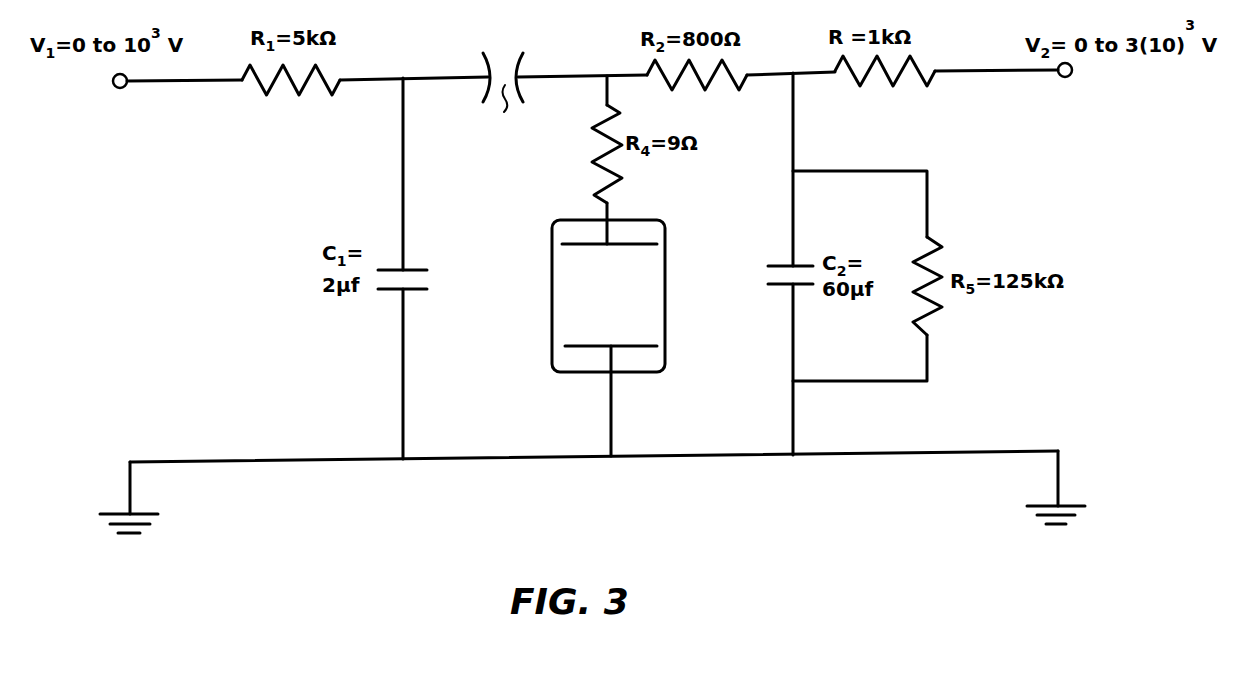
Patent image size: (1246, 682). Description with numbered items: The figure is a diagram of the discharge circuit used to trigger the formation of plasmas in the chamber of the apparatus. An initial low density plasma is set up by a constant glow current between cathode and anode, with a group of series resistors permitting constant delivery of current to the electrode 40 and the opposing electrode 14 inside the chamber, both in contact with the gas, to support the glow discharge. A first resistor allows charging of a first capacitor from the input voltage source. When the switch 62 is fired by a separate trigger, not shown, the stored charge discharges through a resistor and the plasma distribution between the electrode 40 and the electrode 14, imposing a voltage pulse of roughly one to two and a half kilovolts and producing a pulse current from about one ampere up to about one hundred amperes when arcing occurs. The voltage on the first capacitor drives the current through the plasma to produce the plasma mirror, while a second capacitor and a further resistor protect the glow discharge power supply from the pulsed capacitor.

The switch 62 is at (503, 97).
The electrode 40 is at (642, 245).
The workpiece electrode 14 is at (642, 346).